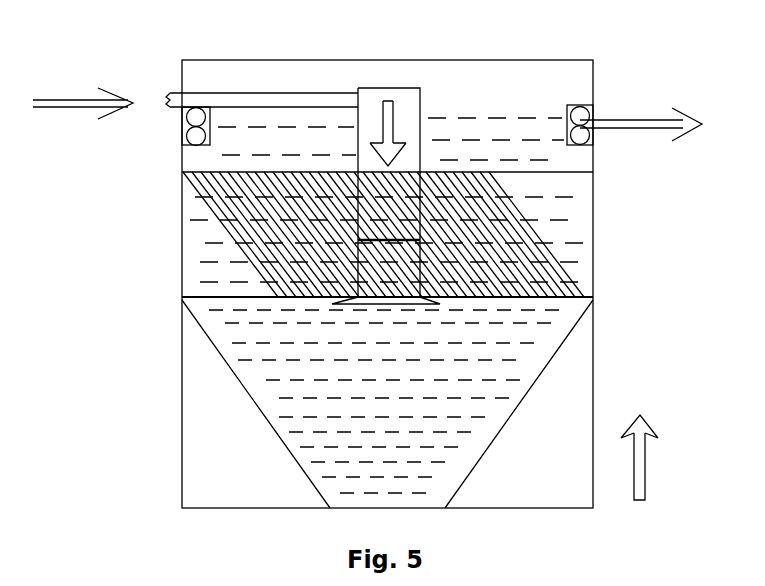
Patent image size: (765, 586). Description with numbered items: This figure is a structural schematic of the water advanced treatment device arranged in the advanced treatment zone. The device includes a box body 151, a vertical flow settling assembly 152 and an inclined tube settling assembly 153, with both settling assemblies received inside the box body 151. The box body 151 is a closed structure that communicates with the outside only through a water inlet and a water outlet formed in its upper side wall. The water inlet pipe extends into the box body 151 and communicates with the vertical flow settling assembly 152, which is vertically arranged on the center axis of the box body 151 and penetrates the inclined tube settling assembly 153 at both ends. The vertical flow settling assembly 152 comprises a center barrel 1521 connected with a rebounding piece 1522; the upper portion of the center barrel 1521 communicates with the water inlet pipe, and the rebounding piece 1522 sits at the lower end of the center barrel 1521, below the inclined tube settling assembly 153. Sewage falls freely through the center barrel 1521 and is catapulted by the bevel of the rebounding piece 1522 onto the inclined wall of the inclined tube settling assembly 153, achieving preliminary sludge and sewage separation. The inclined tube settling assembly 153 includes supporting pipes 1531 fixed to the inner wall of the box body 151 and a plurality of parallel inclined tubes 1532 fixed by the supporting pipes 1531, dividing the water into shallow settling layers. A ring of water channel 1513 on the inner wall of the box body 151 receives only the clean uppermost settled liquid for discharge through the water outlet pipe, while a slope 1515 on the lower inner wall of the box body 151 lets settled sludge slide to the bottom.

The box body 151 is at (557, 70).
The water channel 1513 is at (577, 102).
The slope 1515 is at (240, 386).
The vertical flow settling assembly 152 is at (367, 108).
The center barrel 1521 is at (423, 103).
The rebounding piece 1522 is at (436, 303).
The inclined tube settling assembly 153 is at (230, 220).
The supporting pipe 1531 is at (582, 295).
The inclined tube 1532 is at (563, 248).